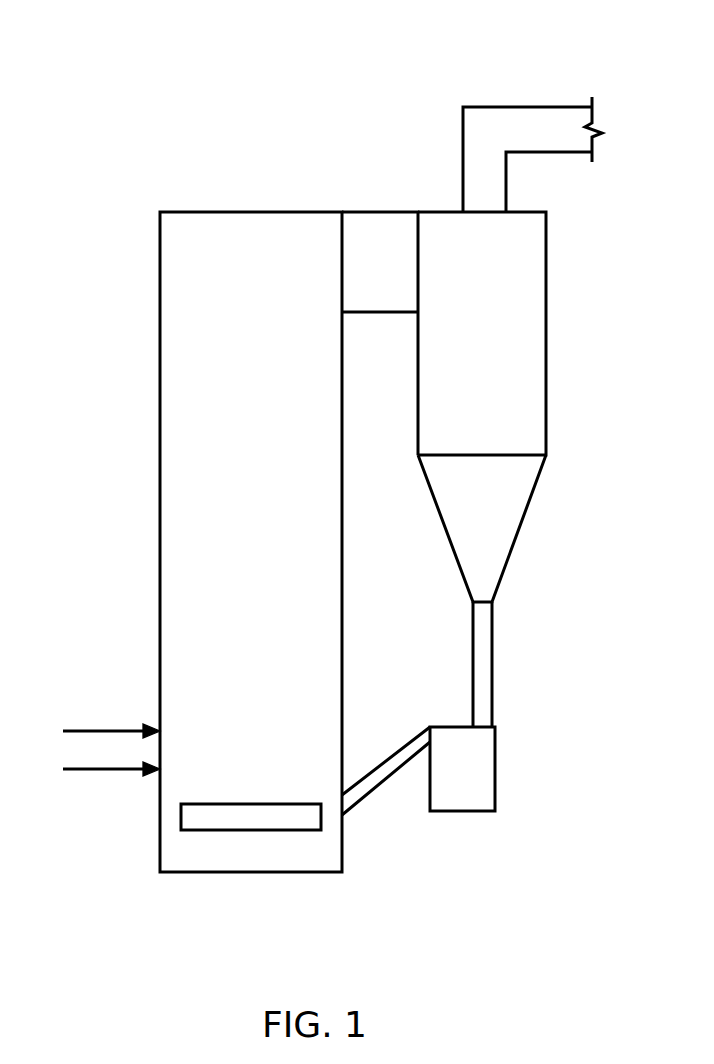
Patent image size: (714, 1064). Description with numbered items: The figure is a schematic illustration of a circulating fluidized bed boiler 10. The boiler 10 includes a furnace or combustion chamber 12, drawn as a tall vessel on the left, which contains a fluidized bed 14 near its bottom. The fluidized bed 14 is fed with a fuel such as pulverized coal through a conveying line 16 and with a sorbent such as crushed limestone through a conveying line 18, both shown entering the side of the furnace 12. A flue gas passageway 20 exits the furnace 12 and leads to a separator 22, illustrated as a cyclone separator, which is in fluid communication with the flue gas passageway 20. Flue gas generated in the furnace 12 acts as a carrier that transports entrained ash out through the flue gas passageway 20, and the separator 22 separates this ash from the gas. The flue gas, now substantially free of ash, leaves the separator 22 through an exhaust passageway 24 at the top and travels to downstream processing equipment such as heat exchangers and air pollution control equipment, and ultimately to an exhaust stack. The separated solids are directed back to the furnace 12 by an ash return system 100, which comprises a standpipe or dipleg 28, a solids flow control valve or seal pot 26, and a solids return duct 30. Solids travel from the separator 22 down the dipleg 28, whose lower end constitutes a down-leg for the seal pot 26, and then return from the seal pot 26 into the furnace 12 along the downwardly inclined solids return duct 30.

The circulating fluidized bed boiler 10 is at (137, 187).
The furnace 12 is at (180, 498).
The fluidized bed 14 is at (227, 813).
The conveying line 16 is at (90, 772).
The conveying line 18 is at (92, 728).
The flue gas passageway 20 is at (388, 230).
The separator 22 is at (522, 323).
The exhaust passageway 24 is at (537, 128).
The seal pot 26 is at (472, 777).
The dipleg 28 is at (480, 676).
The solids return duct 30 is at (388, 783).
The ash return system 100 is at (508, 703).